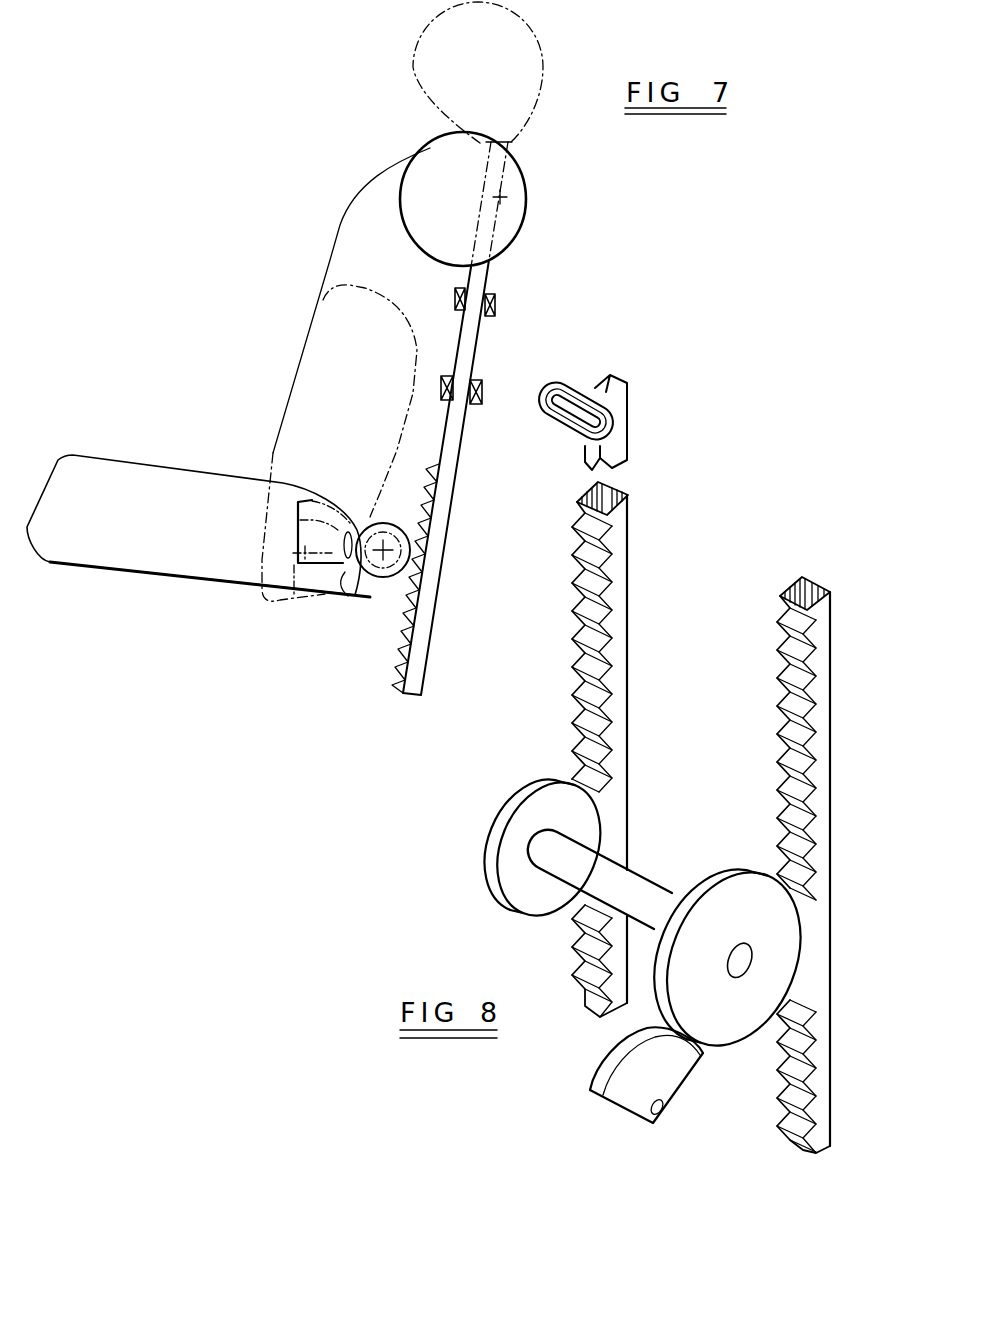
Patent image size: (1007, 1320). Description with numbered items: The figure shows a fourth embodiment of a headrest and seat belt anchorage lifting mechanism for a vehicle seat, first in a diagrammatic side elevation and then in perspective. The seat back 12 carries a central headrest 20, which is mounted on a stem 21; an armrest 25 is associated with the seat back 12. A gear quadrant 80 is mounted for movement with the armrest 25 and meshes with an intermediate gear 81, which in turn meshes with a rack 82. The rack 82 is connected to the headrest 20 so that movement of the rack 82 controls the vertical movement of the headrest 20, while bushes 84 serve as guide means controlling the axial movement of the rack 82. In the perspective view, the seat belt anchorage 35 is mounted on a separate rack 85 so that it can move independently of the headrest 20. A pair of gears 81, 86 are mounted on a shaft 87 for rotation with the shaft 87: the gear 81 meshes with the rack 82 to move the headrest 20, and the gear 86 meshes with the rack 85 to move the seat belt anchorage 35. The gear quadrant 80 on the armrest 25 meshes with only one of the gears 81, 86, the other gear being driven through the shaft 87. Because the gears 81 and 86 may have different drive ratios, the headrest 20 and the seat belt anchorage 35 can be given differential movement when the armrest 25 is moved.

In FIG. 7, the seat back 12 is at (350, 213).
In FIG. 7, the central headrest 20 is at (428, 155).
In FIG. 7, the stem 21 is at (492, 278).
In FIG. 7, the armrest 25 is at (313, 333).
In FIG. 7, the seat belt anchorage 35 is at (562, 433).
In FIG. 7, the gear quadrant 80 is at (298, 520).
In FIG. 8, the gear quadrant 80 is at (623, 1097).
In FIG. 7, the intermediate gear 81 is at (398, 543).
In FIG. 8, the intermediate gear 81 is at (770, 973).
In FIG. 7, the rack 82 is at (414, 612).
In FIG. 8, the rack 82 is at (828, 792).
In FIG. 7, the bushes 84 is at (484, 393).
In FIG. 8, the separate rack 85 is at (617, 643).
In FIG. 8, the gear 86 is at (505, 832).
In FIG. 8, the shaft 87 is at (663, 900).